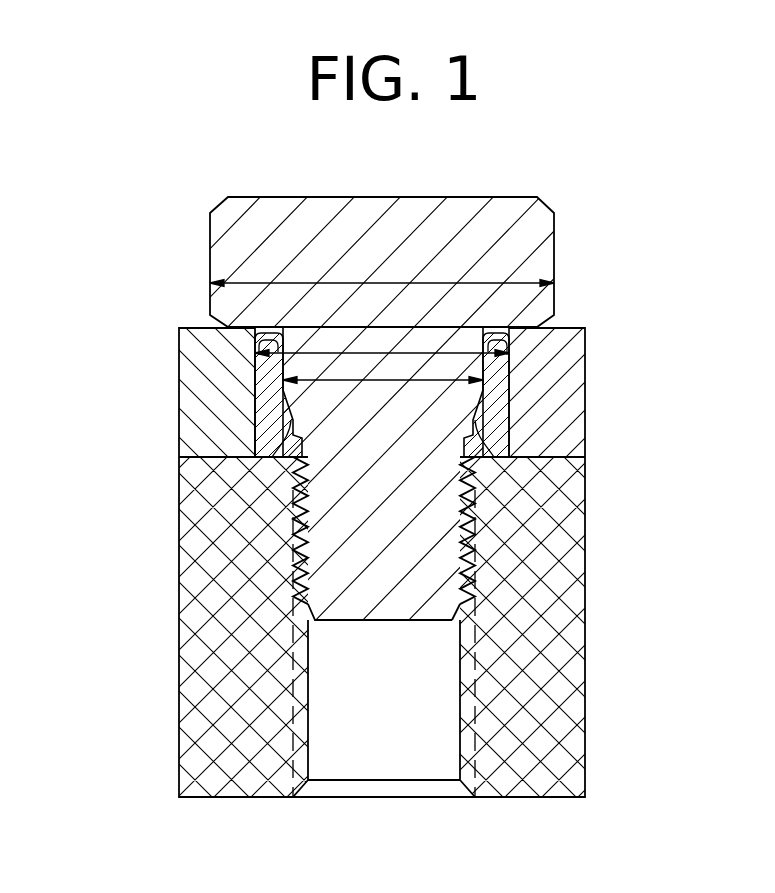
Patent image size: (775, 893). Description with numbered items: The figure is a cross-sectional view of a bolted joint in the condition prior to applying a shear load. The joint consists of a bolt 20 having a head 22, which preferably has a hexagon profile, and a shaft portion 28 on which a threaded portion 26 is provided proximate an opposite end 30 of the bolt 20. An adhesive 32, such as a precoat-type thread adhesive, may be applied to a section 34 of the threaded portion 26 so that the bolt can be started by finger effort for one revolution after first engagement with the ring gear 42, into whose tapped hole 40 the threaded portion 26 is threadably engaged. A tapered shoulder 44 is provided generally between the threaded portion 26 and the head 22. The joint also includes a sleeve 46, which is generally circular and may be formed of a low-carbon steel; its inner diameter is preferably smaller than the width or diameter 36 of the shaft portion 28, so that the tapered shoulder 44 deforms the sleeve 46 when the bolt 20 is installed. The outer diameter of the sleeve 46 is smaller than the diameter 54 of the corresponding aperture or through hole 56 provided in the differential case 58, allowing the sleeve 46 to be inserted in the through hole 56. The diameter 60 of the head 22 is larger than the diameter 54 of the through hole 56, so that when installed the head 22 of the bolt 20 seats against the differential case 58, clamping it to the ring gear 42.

The bolt 20 is at (483, 190).
The head 22 is at (549, 258).
The threaded portion 26 is at (485, 573).
The shaft portion 28 is at (338, 603).
The opposite end 30 is at (417, 622).
The adhesive 32 is at (293, 540).
The section 34 is at (510, 527).
The diameter of the shaft portion 36 is at (330, 380).
The tapped hole 40 is at (308, 723).
The ring gear 42 is at (558, 617).
The tapered shoulder 44 is at (290, 458).
The sleeve 46 is at (524, 393).
The diameter of the through hole 54 is at (332, 353).
The through hole 56 is at (265, 395).
The differential case 58 is at (586, 420).
The diameter of the head portion 60 is at (297, 283).